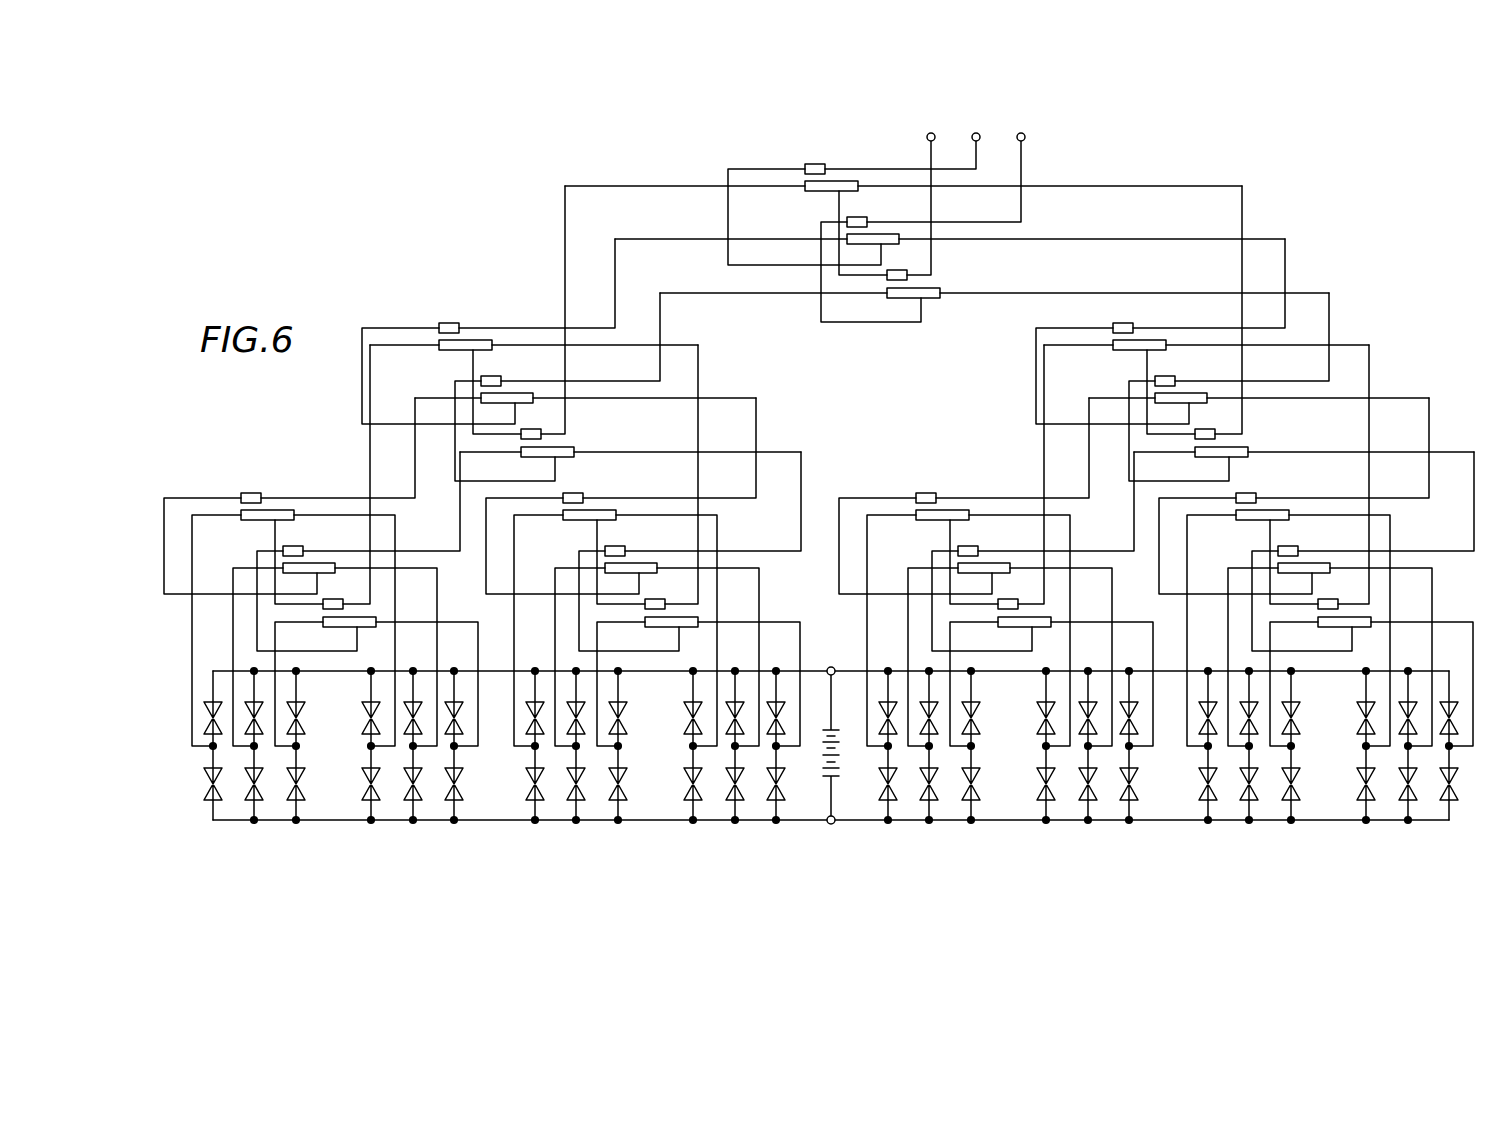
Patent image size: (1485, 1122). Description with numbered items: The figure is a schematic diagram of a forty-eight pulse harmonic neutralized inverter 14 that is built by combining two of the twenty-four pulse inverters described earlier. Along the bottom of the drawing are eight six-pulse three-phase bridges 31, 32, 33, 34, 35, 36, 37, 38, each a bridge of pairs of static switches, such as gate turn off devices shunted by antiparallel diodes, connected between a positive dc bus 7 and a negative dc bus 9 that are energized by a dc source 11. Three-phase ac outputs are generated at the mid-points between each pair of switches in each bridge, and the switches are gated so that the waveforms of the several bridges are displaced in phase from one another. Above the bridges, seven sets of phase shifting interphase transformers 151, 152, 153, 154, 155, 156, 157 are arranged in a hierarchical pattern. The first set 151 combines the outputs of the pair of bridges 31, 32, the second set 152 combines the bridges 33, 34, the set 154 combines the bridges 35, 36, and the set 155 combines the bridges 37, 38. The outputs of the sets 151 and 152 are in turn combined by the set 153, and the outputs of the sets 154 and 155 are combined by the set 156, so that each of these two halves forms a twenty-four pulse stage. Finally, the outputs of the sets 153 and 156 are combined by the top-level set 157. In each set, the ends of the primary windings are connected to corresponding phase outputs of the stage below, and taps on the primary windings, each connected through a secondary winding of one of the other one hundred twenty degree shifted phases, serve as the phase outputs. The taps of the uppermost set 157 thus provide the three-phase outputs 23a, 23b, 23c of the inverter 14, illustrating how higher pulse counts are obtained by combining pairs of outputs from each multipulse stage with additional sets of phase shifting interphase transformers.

The 48 pulse harmonic neutralized inverter 14 is at (1399, 277).
The set of phase shifting interphase transformers 151 is at (230, 486).
The set of phase shifting interphase transformers 152 is at (622, 488).
The set of phase shifting interphase transformers 153 is at (424, 318).
The set of phase shifting interphase transformers 154 is at (906, 487).
The set of phase shifting interphase transformers 155 is at (1294, 490).
The set of phase shifting interphase transformers 156 is at (1180, 322).
The set of phase shifting interphase transformers 157 is at (796, 160).
The six-pulse three-phase bridge 31 is at (263, 830).
The six-pulse three-phase bridge 32 is at (400, 830).
The six-pulse three-phase bridge 33 is at (567, 830).
The six-pulse three-phase bridge 34 is at (738, 830).
The six-pulse three-phase bridge 35 is at (937, 830).
The six-pulse three-phase bridge 36 is at (1102, 830).
The six-pulse three-phase bridge 37 is at (1265, 830).
The six-pulse three-phase bridge 38 is at (1397, 830).
The positive dc bus 7 is at (816, 671).
The negative dc bus 9 is at (857, 822).
The dc source 11 is at (818, 755).
The phase output 23a is at (927, 137).
The phase output 23b is at (975, 133).
The phase output 23c is at (1025, 137).